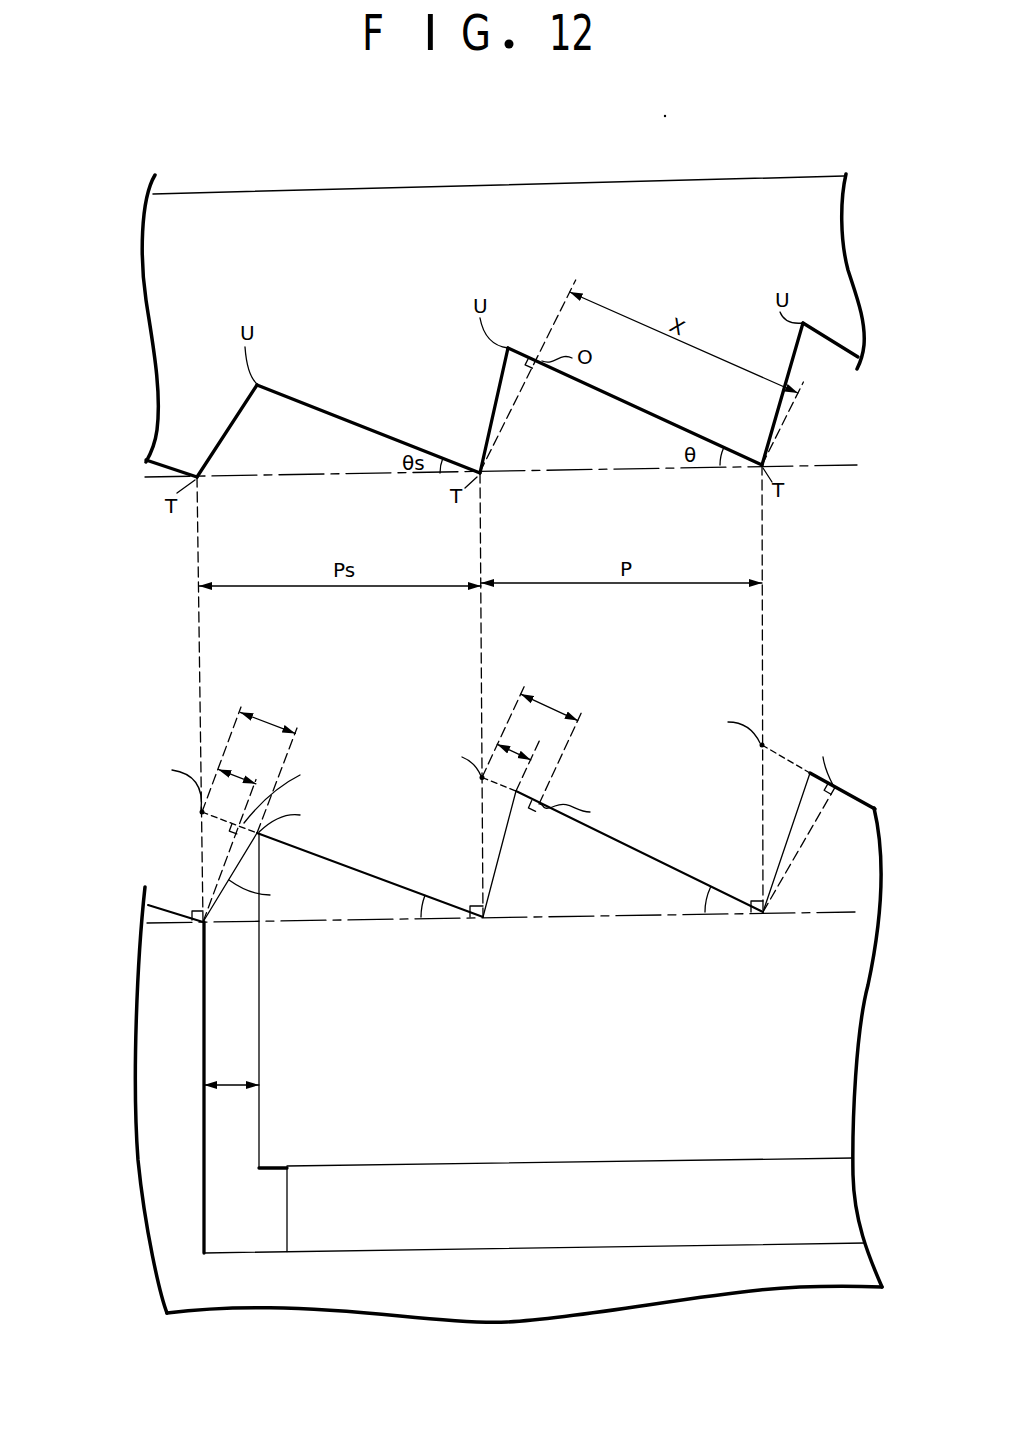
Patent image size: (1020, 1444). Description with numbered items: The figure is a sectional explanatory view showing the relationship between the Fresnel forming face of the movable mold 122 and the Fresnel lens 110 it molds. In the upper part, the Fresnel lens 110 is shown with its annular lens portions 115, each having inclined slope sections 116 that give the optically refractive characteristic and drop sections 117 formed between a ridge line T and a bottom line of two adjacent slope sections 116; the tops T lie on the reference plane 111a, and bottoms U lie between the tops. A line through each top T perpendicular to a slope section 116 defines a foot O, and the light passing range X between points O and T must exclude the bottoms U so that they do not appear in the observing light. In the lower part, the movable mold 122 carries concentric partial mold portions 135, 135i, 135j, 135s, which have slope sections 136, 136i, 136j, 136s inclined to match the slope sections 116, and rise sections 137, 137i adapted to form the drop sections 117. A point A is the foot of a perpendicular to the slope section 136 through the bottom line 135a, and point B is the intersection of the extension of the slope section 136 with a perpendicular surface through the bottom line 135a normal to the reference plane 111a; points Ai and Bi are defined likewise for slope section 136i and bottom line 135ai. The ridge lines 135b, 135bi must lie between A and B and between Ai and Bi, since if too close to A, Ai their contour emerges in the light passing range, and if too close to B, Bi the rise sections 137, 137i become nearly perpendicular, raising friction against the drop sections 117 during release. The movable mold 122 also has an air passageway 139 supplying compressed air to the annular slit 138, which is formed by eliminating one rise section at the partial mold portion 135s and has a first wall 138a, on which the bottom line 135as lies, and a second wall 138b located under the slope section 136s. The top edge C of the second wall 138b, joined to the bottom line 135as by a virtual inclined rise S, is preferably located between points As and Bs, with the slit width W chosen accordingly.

The Fresnel lens 110 is at (381, 187).
The reference plane 111a is at (807, 470).
The annular lens portions 115 is at (396, 444).
The slope sections 116 is at (368, 431).
The drop sections 117 is at (218, 446).
The movable mold 122 is at (178, 1212).
The partial mold portion 135 is at (591, 779).
The bottom line 135a is at (483, 917).
The bottom line 135ai is at (762, 915).
The bottom line 135as is at (204, 923).
The ridge line 135b is at (518, 792).
The ridge line 135bi is at (808, 770).
The partial mold portion 135i is at (797, 774).
The partial mold portion 135j is at (186, 905).
The partial mold portion 135s is at (315, 782).
The slope section 136 is at (660, 860).
The slope section 136i is at (873, 772).
The slope section 136j is at (167, 907).
The slope section 136s is at (312, 851).
The rise section 137 is at (500, 855).
The rise section 137i is at (785, 848).
The annular slit 138 is at (281, 1043).
The first wall 138a is at (206, 1143).
The second wall 138b is at (262, 1132).
The air passageway 139 is at (717, 1160).